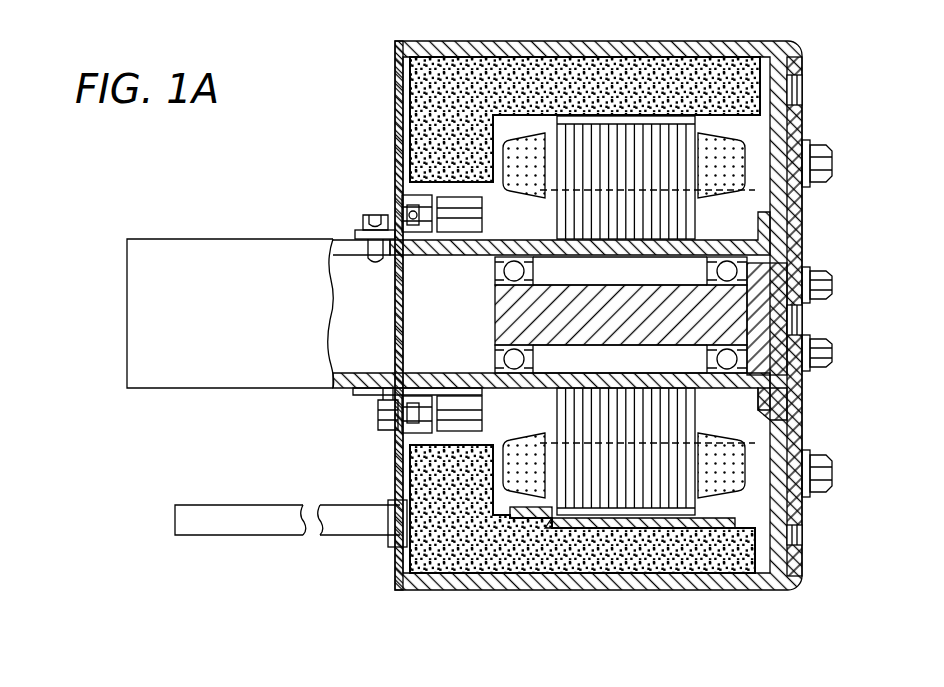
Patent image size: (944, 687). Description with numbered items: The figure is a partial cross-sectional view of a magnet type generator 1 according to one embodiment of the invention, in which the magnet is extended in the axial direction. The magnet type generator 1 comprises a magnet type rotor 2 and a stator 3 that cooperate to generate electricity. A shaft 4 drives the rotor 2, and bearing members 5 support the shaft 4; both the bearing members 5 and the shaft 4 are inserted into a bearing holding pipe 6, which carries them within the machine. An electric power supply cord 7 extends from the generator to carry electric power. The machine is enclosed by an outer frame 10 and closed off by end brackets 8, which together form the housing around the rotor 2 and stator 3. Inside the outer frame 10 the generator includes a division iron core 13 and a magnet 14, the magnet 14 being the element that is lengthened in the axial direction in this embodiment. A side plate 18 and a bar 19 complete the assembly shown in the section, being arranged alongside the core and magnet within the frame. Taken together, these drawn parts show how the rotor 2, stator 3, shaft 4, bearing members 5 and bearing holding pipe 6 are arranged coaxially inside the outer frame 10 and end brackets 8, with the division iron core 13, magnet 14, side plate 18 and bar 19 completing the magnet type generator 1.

The magnet type generator 1 is at (803, 258).
The magnet type rotor 2 is at (595, 113).
The stator 3 is at (675, 130).
The shaft 4 is at (707, 330).
The bearing members 5 is at (790, 400).
The bearing holding pipe 6 is at (250, 389).
The electric power supply cord 7 is at (255, 525).
The end brackets 8 is at (395, 120).
The outer frame 10 is at (518, 45).
The division iron core 13 is at (433, 523).
The magnet 14 is at (433, 60).
The side plate 18 is at (538, 523).
The bar 19 is at (610, 528).